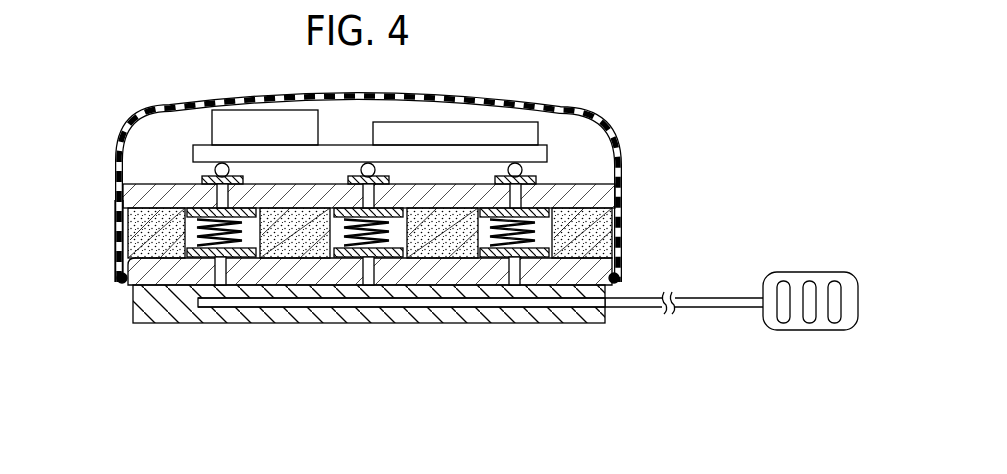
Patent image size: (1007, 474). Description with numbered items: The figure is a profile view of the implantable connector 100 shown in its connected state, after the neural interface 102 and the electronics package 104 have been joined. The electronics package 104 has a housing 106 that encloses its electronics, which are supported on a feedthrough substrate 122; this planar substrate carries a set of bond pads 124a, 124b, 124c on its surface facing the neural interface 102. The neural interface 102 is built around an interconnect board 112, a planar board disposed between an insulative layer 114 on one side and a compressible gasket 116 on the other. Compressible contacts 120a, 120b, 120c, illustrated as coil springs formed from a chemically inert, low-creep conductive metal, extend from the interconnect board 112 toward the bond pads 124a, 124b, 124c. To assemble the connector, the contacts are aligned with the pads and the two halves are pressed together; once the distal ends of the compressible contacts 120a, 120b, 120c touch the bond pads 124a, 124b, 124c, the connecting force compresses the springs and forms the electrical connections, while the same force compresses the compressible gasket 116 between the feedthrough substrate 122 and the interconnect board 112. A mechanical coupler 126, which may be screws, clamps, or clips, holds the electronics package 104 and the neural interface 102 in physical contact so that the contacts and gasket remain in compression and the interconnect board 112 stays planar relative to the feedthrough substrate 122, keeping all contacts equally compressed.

The implantable connector 100 is at (652, 66).
The electronics package 104 is at (670, 142).
The housing 106 is at (116, 232).
The neural interface 102 is at (658, 266).
The feedthrough substrate 122 is at (607, 195).
The compressible gasket 116 is at (138, 228).
The bond pad 124a is at (253, 218).
The bond pad 124b is at (400, 218).
The bond pad 124c is at (543, 218).
The compressible contact 120a is at (210, 258).
The compressible contact 120b is at (357, 258).
The compressible contact 120c is at (500, 258).
The interconnect board 112 is at (130, 284).
The insulative layer 114 is at (155, 312).
The mechanical coupler 126 is at (125, 281).